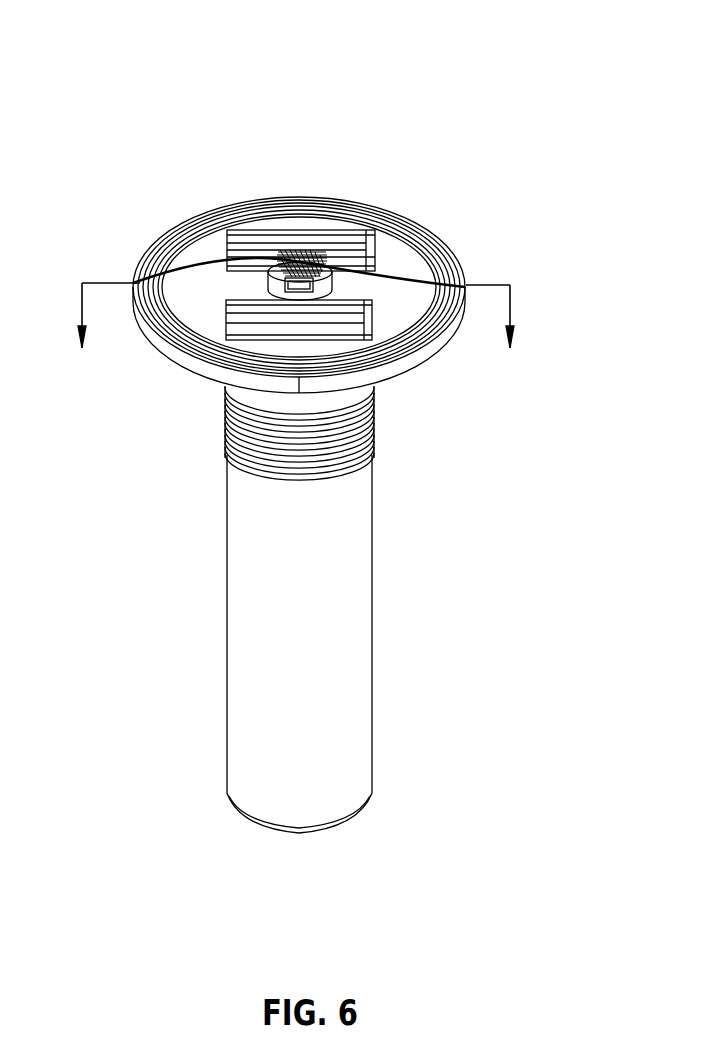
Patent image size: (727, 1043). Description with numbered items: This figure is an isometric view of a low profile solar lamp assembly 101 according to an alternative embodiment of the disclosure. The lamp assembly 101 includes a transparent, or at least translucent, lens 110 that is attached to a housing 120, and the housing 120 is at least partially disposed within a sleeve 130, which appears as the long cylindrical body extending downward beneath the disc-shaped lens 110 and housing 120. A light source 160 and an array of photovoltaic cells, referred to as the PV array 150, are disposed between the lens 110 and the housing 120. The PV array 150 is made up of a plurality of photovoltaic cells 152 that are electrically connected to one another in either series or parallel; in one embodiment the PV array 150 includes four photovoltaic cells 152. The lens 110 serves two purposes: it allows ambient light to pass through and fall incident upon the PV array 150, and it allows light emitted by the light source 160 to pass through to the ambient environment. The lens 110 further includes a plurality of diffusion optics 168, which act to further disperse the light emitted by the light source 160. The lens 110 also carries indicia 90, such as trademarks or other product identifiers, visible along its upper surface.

The low profile solar lamp assembly 101 is at (467, 116).
The sleeve 130 is at (372, 584).
The housing 120 is at (428, 364).
The lens 110 is at (433, 231).
The PV array 150 is at (203, 245).
The photovoltaic cells 152 is at (250, 230).
The light source 160 is at (308, 280).
The diffusion optics 168 is at (312, 288).
The indicia 90 is at (457, 258).